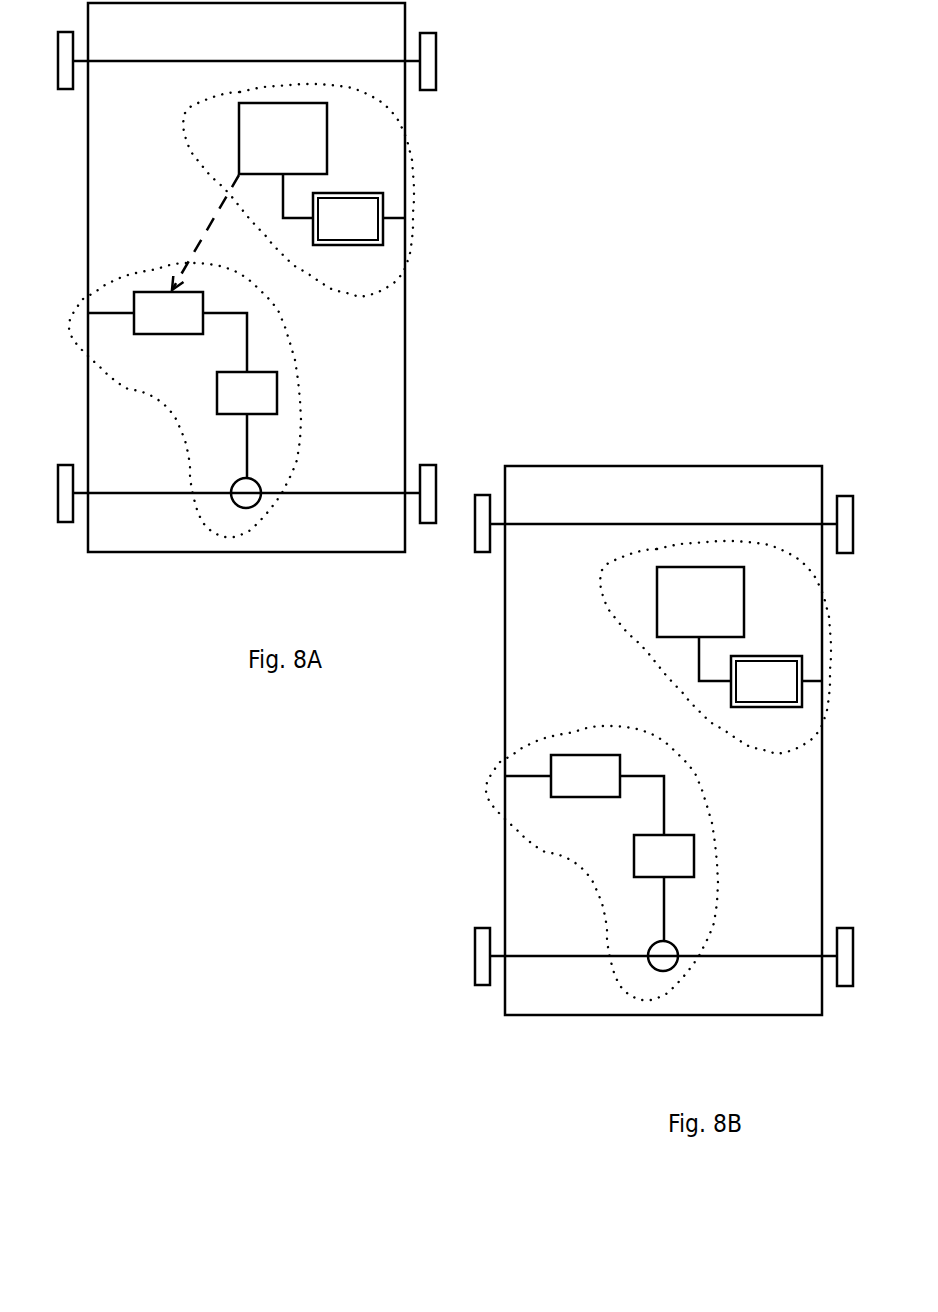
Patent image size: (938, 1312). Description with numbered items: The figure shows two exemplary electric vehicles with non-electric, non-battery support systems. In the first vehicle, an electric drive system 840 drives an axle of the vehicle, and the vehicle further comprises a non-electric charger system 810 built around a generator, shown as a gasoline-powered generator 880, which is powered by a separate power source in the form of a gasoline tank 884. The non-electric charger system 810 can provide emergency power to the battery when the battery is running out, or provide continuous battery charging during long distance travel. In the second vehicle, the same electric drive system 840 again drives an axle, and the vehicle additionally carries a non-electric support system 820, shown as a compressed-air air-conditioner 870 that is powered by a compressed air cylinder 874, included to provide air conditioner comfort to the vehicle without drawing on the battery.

In FIG. 8A, the non-electric charger system 810 is at (375, 148).
In FIG. 8B, the non-electric support system 820 is at (795, 593).
In FIG. 8A, the electric drive system 840 is at (152, 363).
In FIG. 8B, the electric drive system 840 is at (570, 825).
In FIG. 8B, the compressed-air air-conditioner 870 is at (700, 624).
In FIG. 8B, the compressed air cylinder 874 is at (776, 681).
In FIG. 8A, the gasoline-powered generator 880 is at (249, 196).
In FIG. 8A, the gasoline tank 884 is at (359, 219).